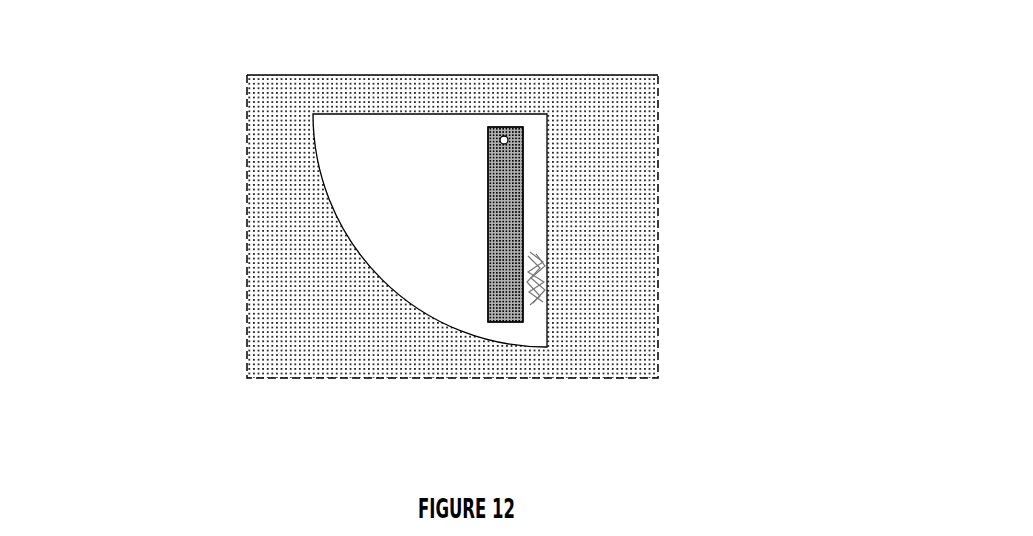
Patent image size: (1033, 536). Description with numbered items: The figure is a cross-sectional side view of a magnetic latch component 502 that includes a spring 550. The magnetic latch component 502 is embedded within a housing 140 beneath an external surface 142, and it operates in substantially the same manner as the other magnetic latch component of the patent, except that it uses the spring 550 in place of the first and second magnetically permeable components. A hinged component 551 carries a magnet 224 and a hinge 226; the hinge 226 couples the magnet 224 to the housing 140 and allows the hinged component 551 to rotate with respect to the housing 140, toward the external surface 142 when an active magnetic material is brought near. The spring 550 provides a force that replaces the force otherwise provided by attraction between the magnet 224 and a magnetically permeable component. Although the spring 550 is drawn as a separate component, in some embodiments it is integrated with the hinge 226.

The magnetic latch component 502 is at (199, 144).
The housing 140 is at (643, 95).
The external surface 142 is at (519, 74).
The hinge 226 is at (504, 136).
The magnet 224 is at (510, 310).
The hinged component 551 is at (517, 322).
The spring 550 is at (540, 305).